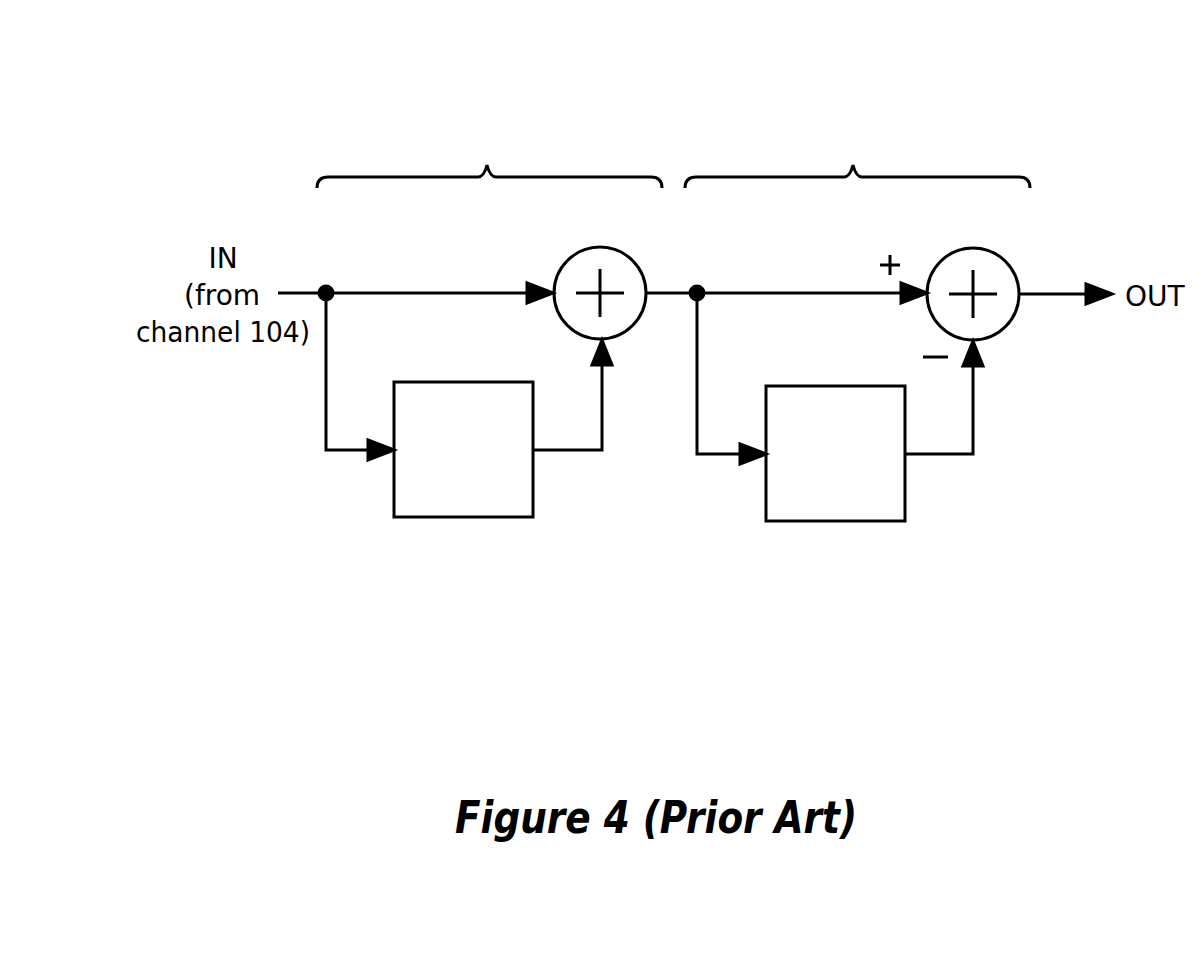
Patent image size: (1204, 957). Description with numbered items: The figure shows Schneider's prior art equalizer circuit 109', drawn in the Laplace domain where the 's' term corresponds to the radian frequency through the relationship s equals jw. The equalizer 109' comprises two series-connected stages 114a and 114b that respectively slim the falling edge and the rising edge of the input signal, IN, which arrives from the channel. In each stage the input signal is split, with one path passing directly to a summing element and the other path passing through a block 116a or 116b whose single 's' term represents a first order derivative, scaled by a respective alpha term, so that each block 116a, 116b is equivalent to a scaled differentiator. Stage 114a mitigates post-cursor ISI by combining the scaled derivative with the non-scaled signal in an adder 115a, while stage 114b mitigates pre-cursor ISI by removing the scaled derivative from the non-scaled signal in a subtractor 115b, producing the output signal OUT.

The equalizer circuit 109' is at (736, 178).
The first stage 114a is at (489, 294).
The second stage 114b is at (857, 296).
The adder 115a is at (613, 249).
The subtractor 115b is at (985, 252).
The block 116a is at (460, 517).
The block 116b is at (830, 521).